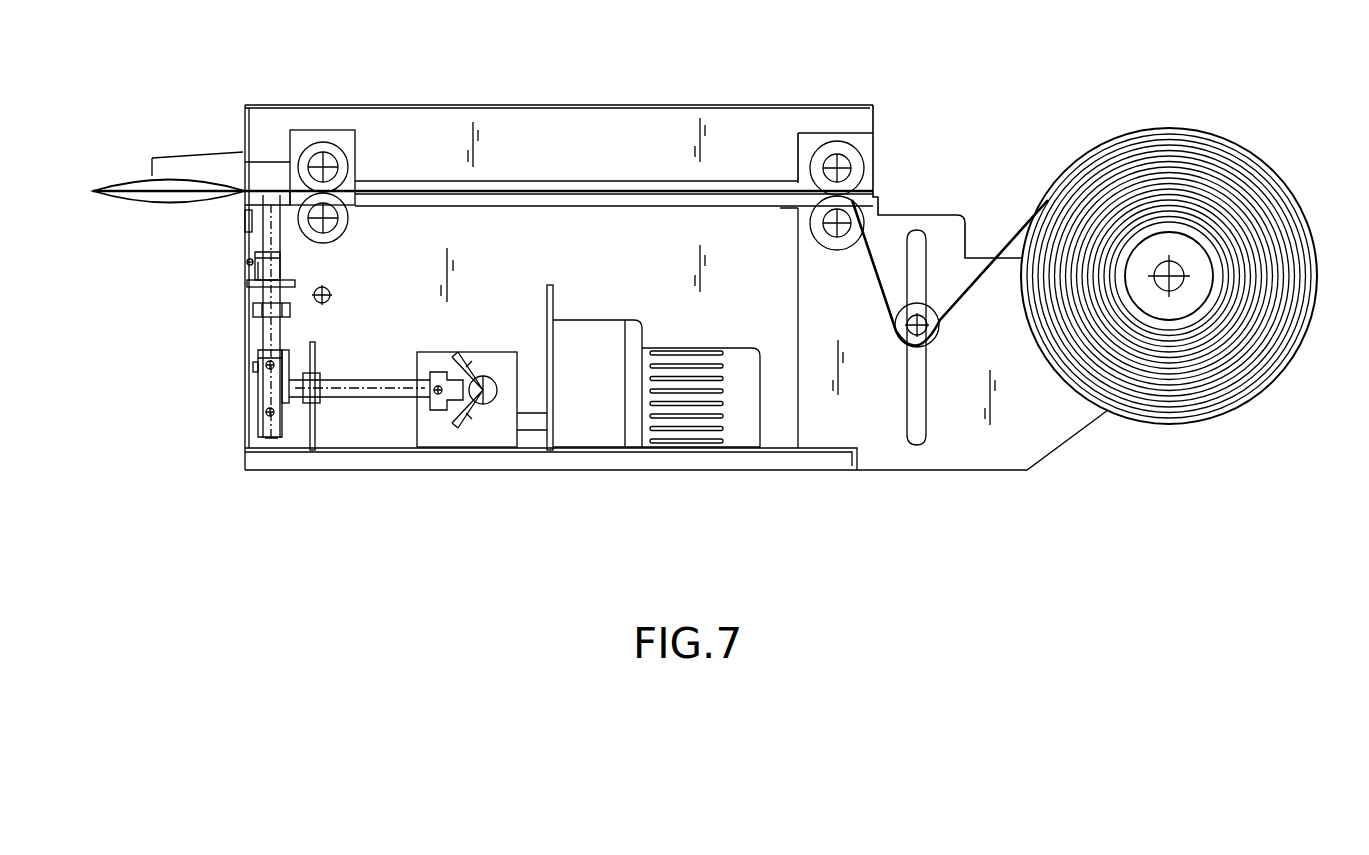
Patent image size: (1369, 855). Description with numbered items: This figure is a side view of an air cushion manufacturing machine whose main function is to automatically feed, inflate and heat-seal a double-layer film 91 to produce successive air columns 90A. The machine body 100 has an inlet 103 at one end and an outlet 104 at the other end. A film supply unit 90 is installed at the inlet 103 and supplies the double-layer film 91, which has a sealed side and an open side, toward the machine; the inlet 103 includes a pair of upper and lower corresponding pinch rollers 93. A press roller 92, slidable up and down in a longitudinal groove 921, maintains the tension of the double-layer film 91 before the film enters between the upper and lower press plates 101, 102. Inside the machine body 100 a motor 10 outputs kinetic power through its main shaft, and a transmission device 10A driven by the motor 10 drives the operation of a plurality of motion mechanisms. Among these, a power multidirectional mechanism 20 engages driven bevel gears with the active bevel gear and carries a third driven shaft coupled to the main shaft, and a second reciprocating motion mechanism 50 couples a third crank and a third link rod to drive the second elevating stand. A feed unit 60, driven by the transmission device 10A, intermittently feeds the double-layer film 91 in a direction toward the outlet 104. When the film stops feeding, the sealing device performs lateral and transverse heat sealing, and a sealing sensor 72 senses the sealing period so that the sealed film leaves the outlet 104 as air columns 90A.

The motor 10 is at (685, 415).
The transmission device 10A is at (547, 250).
The power multidirectional mechanism 20 is at (485, 428).
The second reciprocating motion mechanism 50 is at (240, 338).
The feed unit 60 is at (356, 158).
The sealing sensor 72 is at (245, 222).
The film supply unit 90 is at (1101, 128).
The air columns 90A is at (132, 180).
The double-layer film 91 is at (741, 192).
The press roller 92 is at (920, 303).
The longitudinal groove 921 is at (920, 410).
The pinch rollers 93 is at (855, 175).
The machine body 100 is at (830, 471).
The upper press plate 101 is at (580, 192).
The lower press plate 102 is at (627, 205).
The inlet 103 is at (880, 197).
The outlet 104 is at (243, 162).